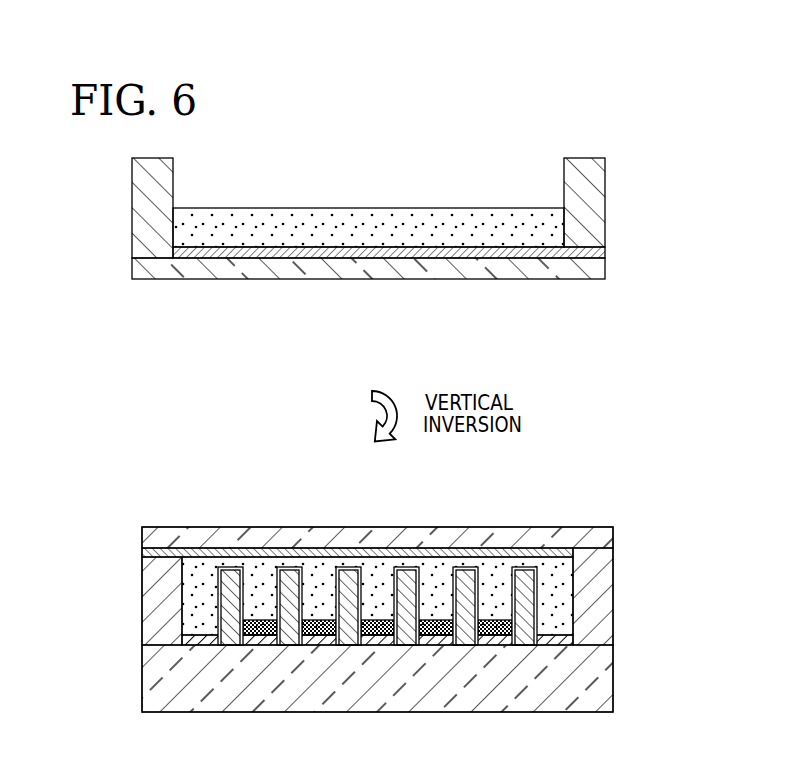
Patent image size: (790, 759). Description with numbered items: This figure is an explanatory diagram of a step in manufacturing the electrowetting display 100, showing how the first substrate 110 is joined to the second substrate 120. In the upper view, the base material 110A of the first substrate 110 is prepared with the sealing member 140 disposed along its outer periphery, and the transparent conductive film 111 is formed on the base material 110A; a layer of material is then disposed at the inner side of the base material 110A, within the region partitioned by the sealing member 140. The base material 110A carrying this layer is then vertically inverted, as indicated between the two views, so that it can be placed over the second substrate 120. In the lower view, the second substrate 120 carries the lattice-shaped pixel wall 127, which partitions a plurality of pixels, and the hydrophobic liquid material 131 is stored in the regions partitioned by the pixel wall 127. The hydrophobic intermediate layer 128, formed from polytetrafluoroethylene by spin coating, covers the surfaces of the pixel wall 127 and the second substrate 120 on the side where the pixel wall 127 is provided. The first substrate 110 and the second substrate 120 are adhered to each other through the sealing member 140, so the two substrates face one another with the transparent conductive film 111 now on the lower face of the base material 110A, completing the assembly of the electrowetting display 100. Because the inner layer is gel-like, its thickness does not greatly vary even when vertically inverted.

The electrowetting display 100 is at (592, 428).
The first substrate 110 is at (372, 403).
The base material 110A is at (370, 272).
The transparent conductive film 111 is at (598, 249).
The second substrate 120 is at (620, 642).
The pixel wall 127 is at (230, 573).
The hydrophobic intermediate layer 128 is at (537, 599).
The hydrophobic liquid material 131 is at (372, 230).
The sealing member 140 is at (592, 203).